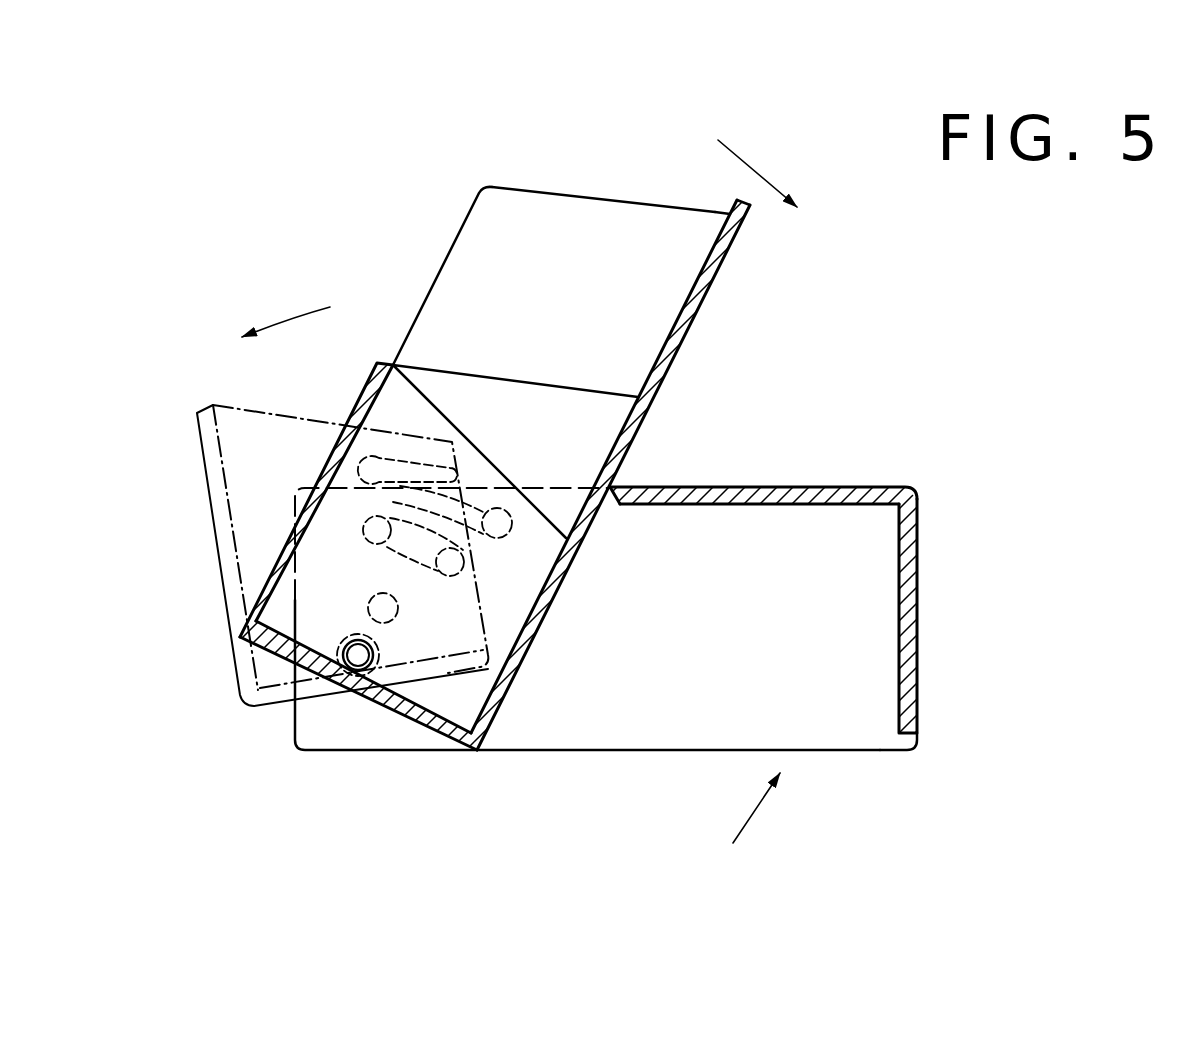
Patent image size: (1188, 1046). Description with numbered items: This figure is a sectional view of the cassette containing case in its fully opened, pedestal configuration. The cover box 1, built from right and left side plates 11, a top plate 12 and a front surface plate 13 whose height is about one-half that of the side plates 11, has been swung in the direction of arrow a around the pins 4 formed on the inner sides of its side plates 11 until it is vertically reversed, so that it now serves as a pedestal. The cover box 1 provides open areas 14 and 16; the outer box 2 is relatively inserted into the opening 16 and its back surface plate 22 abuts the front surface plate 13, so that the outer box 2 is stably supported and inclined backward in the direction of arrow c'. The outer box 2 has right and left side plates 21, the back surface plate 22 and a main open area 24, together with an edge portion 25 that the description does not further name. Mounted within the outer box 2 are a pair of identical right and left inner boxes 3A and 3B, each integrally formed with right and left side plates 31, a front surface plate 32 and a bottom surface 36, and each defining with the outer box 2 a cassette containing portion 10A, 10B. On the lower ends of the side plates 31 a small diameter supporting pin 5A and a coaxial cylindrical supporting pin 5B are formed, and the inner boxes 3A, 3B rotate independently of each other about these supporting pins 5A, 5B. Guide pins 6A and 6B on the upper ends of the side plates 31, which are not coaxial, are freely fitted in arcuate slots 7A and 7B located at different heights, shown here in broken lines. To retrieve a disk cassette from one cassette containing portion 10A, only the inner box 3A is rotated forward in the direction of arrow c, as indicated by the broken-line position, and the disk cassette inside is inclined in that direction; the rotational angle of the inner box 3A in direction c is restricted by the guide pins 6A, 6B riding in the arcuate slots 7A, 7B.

The cover box 1 is at (650, 603).
The right and left side plates 11 is at (655, 722).
The top plate 12 is at (910, 610).
The front surface plate 13 is at (852, 487).
The open area 14 is at (903, 750).
The open area (opening) 16 is at (613, 490).
The outer box 2 is at (604, 440).
The right and left side plates 21 is at (512, 198).
The back surface plate 22 is at (693, 330).
The main open area 24 is at (713, 212).
The front edge of cover 25 is at (468, 218).
The right inner box 3A is at (377, 553).
The left inner box 3B is at (377, 553).
The right and left side plates 31 is at (415, 410).
The front surface plate 32 is at (323, 457).
The bottom surface 36 is at (438, 683).
The cassette containing portion 10A is at (515, 408).
The cassette containing portion 10B is at (474, 398).
The supporting pins 4 is at (398, 609).
The small diameter supporting pin 5A is at (353, 665).
The cylindrical supporting pin 5B is at (377, 678).
The guide pin 6A is at (509, 511).
The guide pin 6B is at (465, 568).
The arcuate slot 7A is at (452, 473).
The arcuate slot 7B is at (363, 531).
The arrow a is at (760, 807).
The arrow c is at (286, 294).
The arrow c' is at (764, 171).